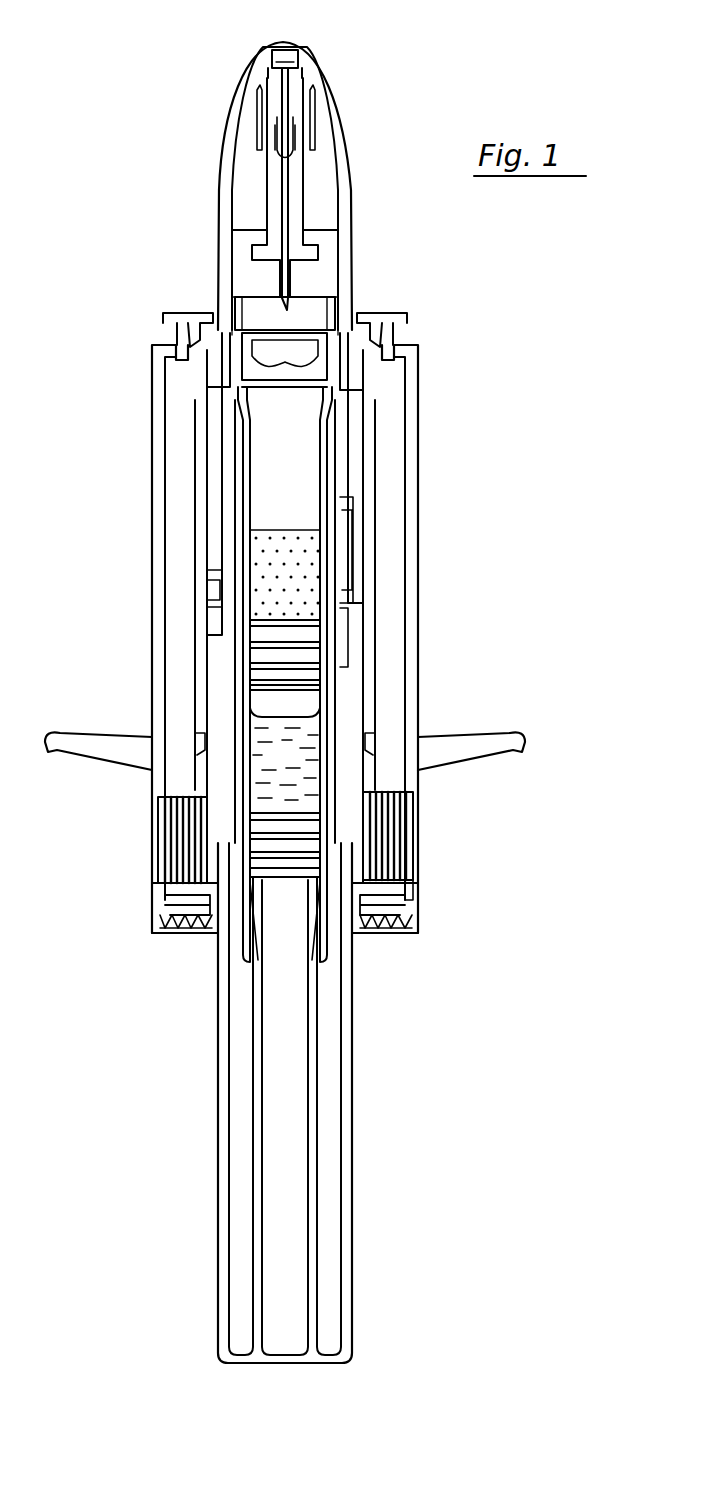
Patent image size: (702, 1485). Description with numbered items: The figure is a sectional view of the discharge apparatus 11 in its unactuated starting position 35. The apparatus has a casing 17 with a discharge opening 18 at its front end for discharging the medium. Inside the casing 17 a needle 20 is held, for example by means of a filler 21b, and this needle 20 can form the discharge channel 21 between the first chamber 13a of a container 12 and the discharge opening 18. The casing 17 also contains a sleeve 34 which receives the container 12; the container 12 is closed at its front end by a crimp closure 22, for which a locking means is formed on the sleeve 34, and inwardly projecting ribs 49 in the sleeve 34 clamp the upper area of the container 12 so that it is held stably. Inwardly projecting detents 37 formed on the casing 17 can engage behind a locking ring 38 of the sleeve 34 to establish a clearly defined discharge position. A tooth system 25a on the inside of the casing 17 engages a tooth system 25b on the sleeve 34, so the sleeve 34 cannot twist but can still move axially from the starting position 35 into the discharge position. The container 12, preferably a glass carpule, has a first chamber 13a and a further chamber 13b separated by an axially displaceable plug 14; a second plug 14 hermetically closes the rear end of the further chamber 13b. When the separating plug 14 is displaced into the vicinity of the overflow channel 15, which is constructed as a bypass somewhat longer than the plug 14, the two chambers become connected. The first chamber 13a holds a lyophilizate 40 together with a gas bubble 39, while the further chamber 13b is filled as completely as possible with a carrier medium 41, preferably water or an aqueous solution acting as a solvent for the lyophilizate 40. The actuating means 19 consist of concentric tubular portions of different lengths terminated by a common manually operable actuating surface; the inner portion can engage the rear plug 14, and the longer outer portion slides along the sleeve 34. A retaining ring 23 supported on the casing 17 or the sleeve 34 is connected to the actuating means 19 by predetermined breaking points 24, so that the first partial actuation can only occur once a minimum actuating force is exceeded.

The discharge apparatus 11 is at (456, 998).
The container 12 is at (330, 772).
The first chamber 13a is at (320, 512).
The further chamber 13b is at (308, 695).
The plug 14 is at (308, 638).
The overflow channel 15 is at (248, 578).
The casing 17 is at (415, 498).
The discharge opening 18 is at (285, 48).
The actuating means 19 is at (350, 1095).
The needle 20 is at (300, 272).
The discharge channel 21 is at (288, 178).
The filler 21b is at (300, 216).
The crimp closure 22 is at (320, 365).
The retaining ring 23 is at (388, 893).
The predetermined breaking points 24 is at (365, 930).
The tooth system on casing 25a is at (410, 833).
The tooth system on sleeve 25b is at (398, 928).
The sleeve 34 is at (358, 698).
The starting position 35 is at (308, 289).
The detents 37 is at (185, 318).
The locking ring 38 is at (362, 395).
The gas bubble 39 is at (296, 453).
The lyophilizate 40 is at (273, 542).
The carrier medium 41 is at (285, 764).
The ribs 49 is at (355, 440).